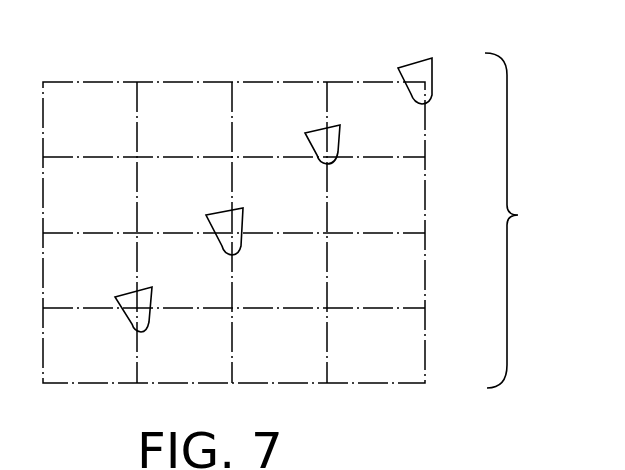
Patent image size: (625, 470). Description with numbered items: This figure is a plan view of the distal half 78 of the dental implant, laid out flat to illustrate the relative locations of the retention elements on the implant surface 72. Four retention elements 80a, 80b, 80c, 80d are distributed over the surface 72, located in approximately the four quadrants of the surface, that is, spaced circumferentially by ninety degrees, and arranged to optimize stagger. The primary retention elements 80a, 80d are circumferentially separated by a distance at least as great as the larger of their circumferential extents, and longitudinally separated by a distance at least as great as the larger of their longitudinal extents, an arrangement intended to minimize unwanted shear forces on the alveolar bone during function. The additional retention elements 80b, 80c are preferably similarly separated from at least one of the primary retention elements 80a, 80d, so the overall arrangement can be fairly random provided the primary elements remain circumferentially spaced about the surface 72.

The implant surface 72 is at (412, 199).
The distal half 78 is at (525, 220).
The retention element 80a is at (427, 65).
The retention element 80b is at (316, 130).
The retention element 80c is at (214, 213).
The retention element 80d is at (121, 294).